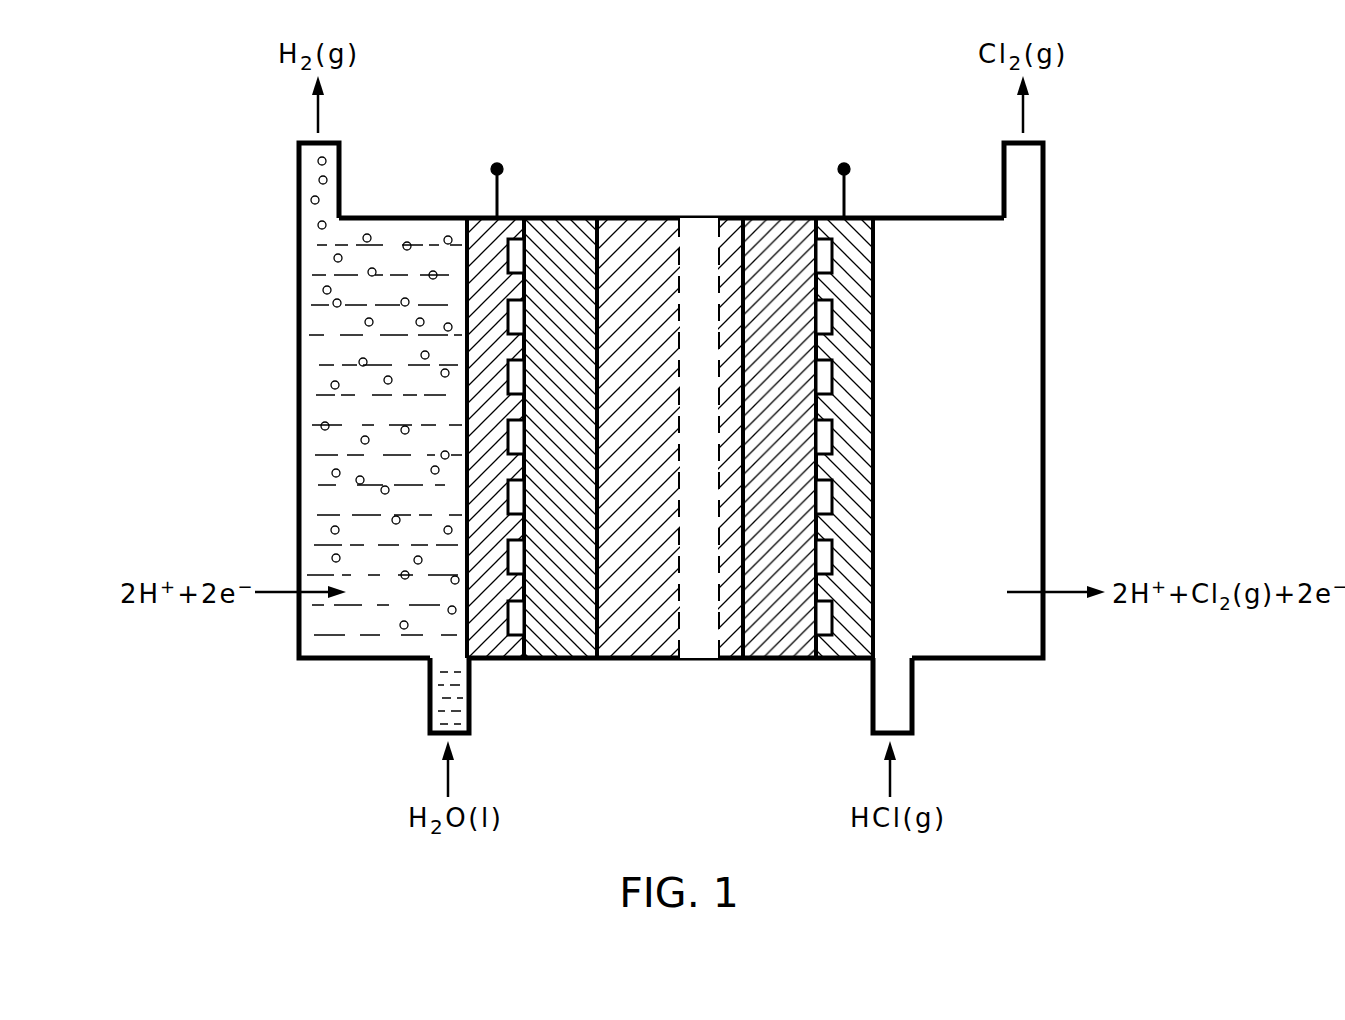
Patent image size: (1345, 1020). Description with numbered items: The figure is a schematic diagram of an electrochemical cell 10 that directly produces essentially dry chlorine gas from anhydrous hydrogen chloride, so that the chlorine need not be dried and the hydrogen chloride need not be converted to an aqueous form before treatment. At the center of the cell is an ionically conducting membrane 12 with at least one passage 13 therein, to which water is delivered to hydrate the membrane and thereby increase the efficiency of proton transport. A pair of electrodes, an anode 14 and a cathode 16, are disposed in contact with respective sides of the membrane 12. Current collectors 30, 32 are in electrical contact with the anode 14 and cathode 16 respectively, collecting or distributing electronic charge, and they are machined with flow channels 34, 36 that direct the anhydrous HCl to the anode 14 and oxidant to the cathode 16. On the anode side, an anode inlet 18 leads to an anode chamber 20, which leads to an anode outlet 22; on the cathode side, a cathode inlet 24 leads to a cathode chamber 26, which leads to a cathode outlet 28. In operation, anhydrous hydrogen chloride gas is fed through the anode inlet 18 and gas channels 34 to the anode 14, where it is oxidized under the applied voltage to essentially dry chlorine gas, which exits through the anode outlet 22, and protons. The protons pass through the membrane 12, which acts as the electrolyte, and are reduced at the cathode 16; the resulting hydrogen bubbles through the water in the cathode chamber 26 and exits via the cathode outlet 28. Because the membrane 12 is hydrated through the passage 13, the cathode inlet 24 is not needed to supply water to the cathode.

The electrochemical cell 10 is at (742, 96).
The ionically conducting membrane 12 is at (638, 662).
The passage 13 is at (681, 628).
The anode 14 is at (773, 232).
The cathode 16 is at (563, 245).
The anode inlet 18 is at (914, 703).
The anode chamber 20 is at (1007, 311).
The anode outlet 22 is at (1047, 181).
The cathode inlet 24 is at (428, 705).
The cathode chamber 26 is at (312, 296).
The cathode outlet 28 is at (299, 183).
The anode current collector 30 is at (853, 242).
The cathode current collector 32 is at (483, 232).
The anode flow channels 34 is at (827, 253).
The cathode flow channels 36 is at (515, 255).